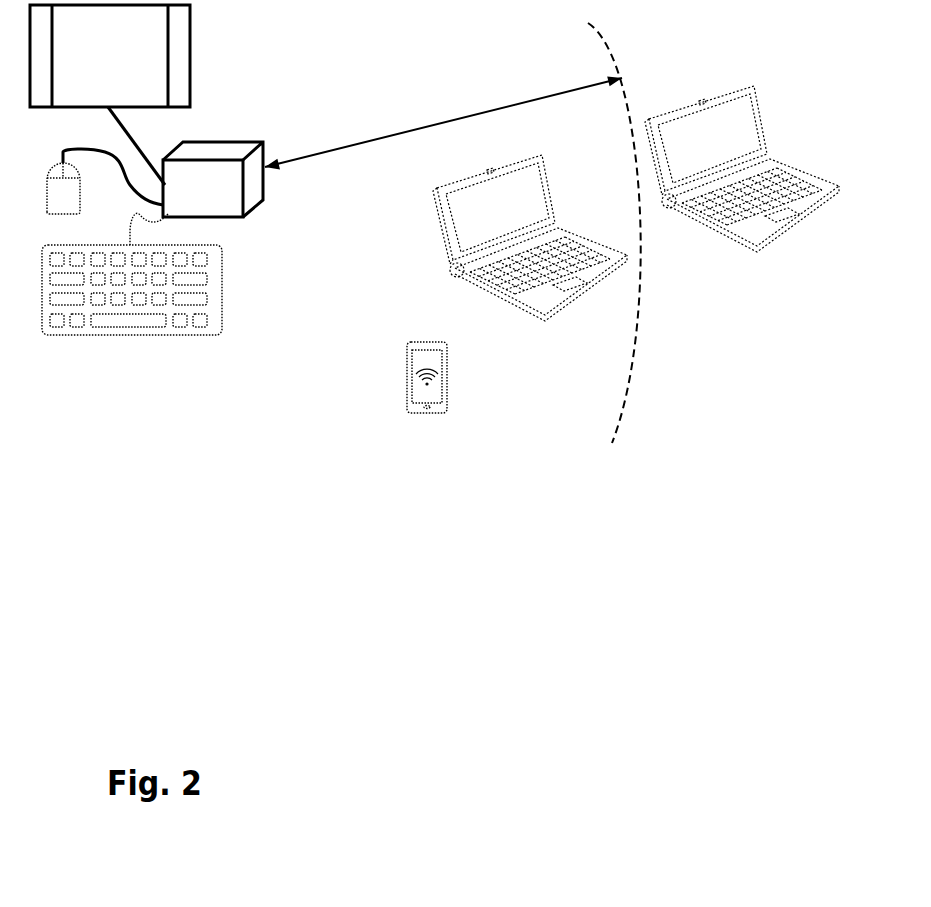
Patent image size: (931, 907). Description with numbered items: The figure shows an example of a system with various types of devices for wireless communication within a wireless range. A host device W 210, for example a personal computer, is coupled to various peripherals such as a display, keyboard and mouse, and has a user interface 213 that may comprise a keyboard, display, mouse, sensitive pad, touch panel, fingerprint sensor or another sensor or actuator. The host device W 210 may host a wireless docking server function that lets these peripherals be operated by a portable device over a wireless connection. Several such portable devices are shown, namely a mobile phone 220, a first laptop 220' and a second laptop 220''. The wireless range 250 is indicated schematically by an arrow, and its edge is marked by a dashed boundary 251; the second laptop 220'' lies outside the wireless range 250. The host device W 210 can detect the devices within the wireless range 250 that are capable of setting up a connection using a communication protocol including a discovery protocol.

The host device W 210 is at (210, 140).
The user interface 213 is at (90, 349).
The mobile phone 220 is at (398, 432).
The first laptop 220' is at (530, 302).
The second laptop 220'' is at (742, 221).
The wireless range 250 is at (463, 115).
The dashed boundary 251 is at (612, 443).